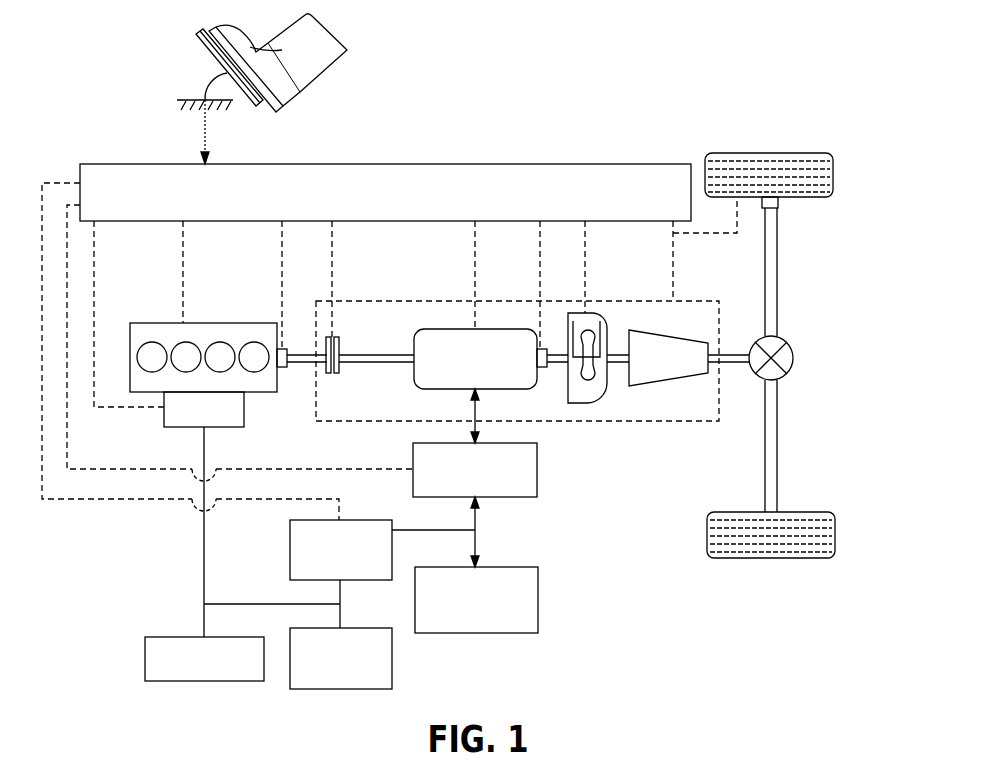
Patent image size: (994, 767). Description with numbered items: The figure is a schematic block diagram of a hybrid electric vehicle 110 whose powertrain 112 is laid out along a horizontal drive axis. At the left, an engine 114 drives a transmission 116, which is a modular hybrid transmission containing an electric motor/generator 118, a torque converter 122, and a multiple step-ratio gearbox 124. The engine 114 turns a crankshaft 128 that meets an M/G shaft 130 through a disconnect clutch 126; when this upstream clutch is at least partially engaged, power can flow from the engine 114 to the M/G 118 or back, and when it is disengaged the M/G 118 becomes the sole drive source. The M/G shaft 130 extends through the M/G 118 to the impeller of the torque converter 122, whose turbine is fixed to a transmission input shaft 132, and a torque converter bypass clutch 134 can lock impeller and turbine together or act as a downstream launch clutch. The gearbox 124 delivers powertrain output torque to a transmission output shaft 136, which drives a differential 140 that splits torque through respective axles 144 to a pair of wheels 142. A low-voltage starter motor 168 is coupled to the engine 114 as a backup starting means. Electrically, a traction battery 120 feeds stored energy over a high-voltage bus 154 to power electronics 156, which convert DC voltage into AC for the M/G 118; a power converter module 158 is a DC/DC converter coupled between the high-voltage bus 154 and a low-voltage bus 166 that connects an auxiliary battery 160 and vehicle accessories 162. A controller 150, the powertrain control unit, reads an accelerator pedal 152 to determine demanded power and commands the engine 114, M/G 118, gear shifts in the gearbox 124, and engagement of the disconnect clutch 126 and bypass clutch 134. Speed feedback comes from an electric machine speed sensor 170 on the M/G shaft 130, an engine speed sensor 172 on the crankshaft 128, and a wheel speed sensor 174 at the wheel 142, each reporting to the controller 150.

The hybrid electric vehicle 110 is at (624, 82).
The powertrain 112 is at (615, 554).
The engine 114 is at (165, 323).
The transmission 116 is at (553, 298).
The electric motor/generator 118 is at (458, 329).
The traction battery 120 is at (538, 600).
The torque converter 122 is at (598, 403).
The gearbox 124 is at (660, 386).
The disconnect clutch 126 is at (338, 366).
The crankshaft 128 is at (290, 350).
The M/G shaft 130 is at (378, 354).
The transmission input shaft 132 is at (617, 350).
The torque converter bypass clutch 134 is at (587, 313).
The transmission output shaft 136 is at (733, 353).
The differential 140 is at (788, 342).
The wheels 142 is at (770, 153).
The axles 144 is at (778, 293).
The controller 150 is at (420, 164).
The accelerator pedal 152 is at (203, 62).
The high-voltage bus 154 is at (478, 540).
The power electronics 156 is at (537, 470).
The power converter module 158 is at (290, 550).
The auxiliary battery 160 is at (393, 660).
The accessories 162 is at (145, 660).
The low-voltage bus 166 is at (203, 558).
The low-voltage starter motor 168 is at (244, 410).
The electric machine speed sensor 170 is at (543, 370).
The engine speed sensor 172 is at (285, 368).
The wheel speed sensor 174 is at (782, 203).